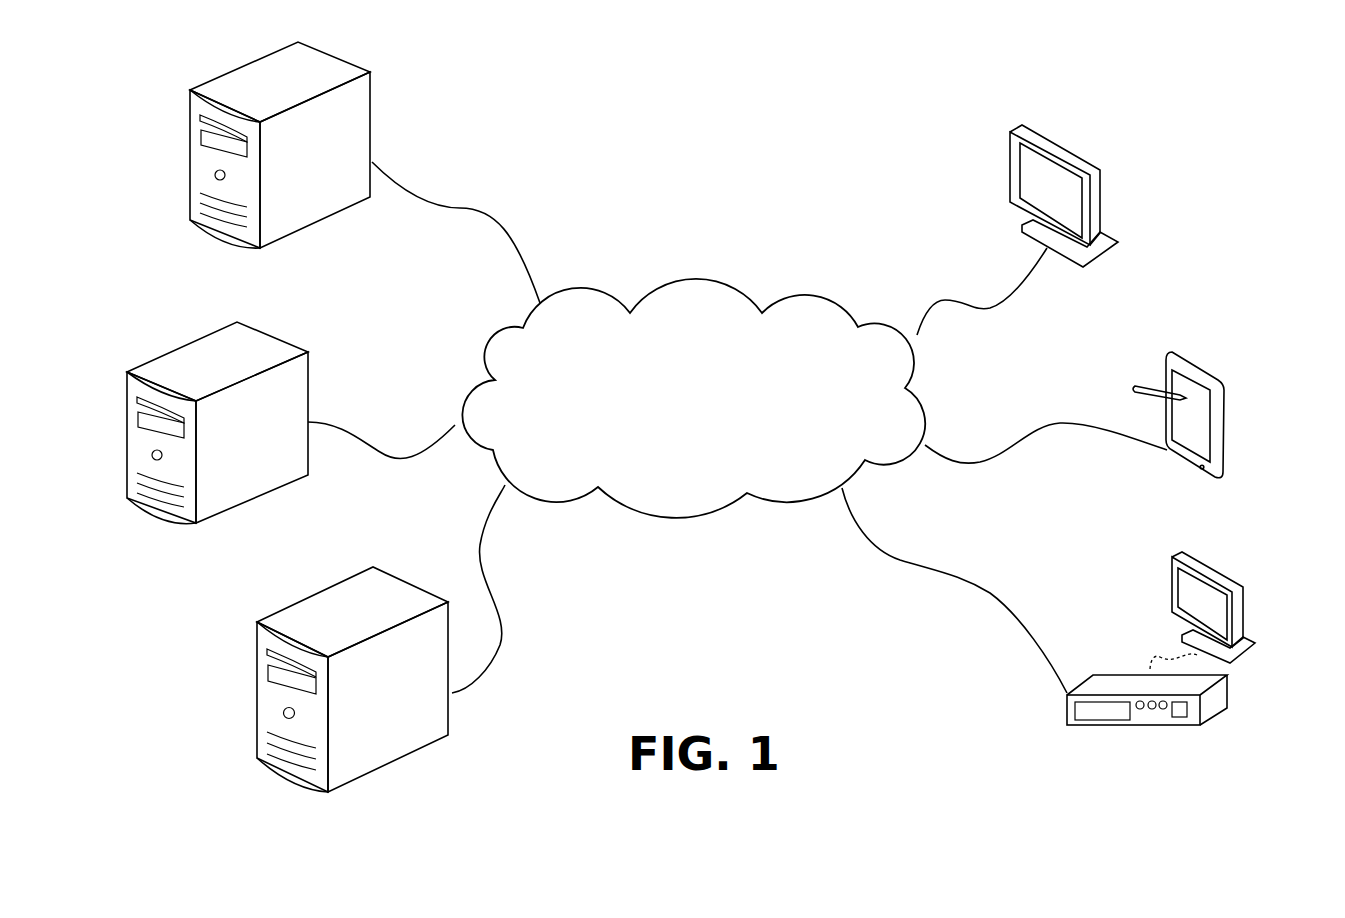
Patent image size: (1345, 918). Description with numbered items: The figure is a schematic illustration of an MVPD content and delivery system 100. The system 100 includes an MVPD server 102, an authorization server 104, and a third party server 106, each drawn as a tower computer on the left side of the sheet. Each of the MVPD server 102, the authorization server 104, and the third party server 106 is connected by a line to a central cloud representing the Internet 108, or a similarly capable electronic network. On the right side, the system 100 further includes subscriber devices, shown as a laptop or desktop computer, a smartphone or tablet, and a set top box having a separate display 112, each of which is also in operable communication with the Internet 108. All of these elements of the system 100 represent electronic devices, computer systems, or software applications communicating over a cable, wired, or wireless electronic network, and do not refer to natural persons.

The MVPD content and delivery system 100 is at (759, 157).
The MVPD server 102 is at (297, 201).
The authorization server 104 is at (233, 483).
The third party server 106 is at (368, 744).
The Internet 108 is at (678, 421).
The display 112 is at (1210, 565).